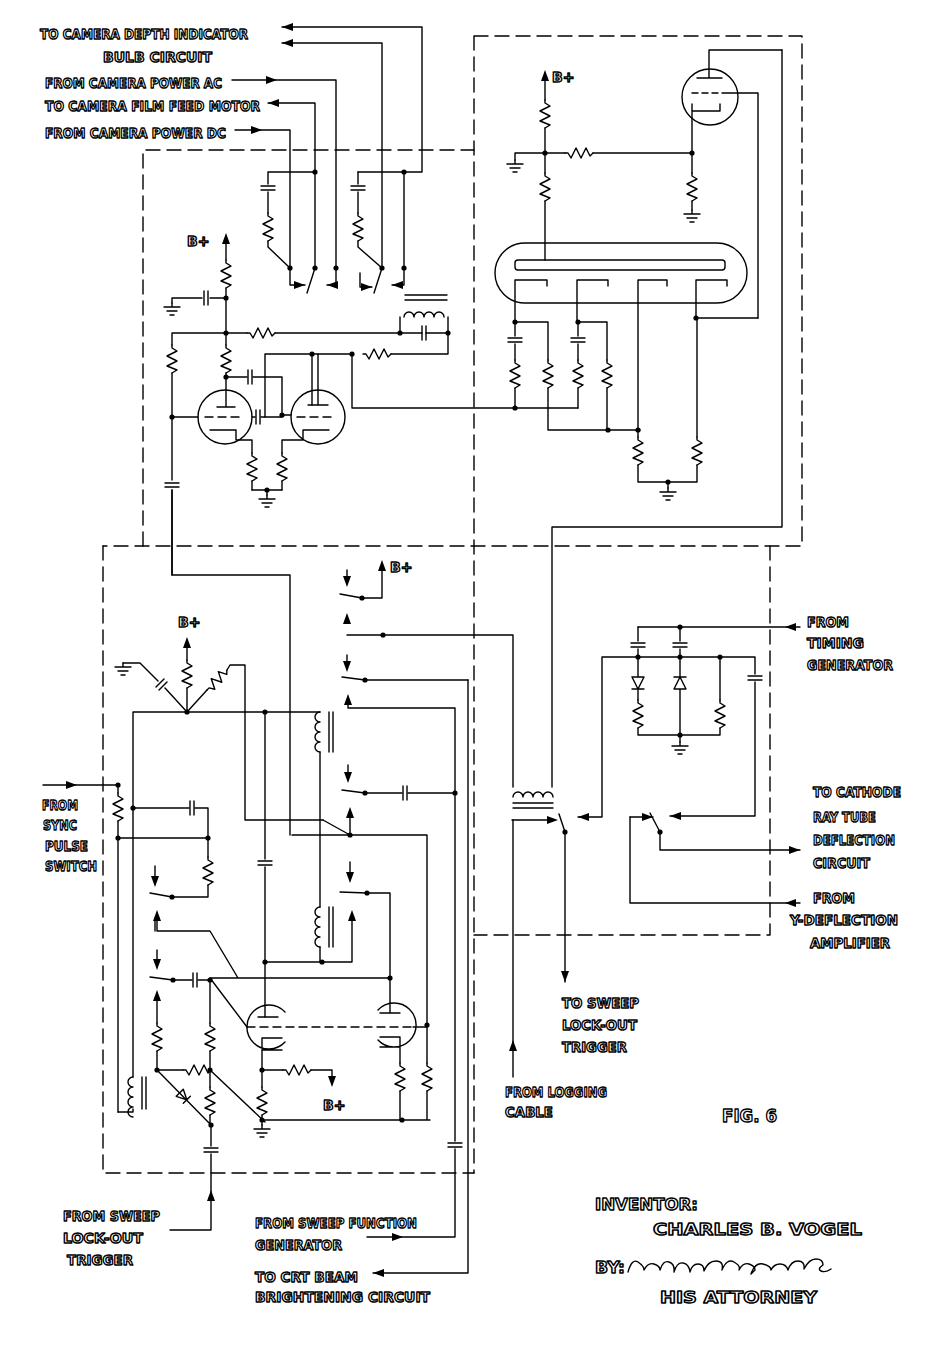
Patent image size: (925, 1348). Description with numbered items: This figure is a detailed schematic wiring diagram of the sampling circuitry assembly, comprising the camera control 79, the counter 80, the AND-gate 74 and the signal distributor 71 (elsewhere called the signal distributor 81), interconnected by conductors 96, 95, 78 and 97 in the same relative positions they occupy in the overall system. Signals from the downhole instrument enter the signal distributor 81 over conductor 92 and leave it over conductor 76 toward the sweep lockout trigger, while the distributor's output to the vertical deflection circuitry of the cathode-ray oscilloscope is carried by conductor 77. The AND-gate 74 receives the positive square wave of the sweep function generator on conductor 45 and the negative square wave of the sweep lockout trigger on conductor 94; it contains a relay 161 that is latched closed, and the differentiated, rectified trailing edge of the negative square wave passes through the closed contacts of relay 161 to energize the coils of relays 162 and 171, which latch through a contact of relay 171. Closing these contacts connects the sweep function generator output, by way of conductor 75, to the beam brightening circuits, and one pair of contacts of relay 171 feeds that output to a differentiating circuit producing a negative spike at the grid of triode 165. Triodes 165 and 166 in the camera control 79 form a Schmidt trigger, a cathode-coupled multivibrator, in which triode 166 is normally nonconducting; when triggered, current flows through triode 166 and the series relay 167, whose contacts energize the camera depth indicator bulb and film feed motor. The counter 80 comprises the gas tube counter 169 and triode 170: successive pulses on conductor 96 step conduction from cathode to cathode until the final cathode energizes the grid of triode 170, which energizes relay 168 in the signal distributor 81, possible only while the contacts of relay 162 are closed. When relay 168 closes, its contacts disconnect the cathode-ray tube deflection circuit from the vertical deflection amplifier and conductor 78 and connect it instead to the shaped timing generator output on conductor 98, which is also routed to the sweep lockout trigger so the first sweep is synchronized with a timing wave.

The conductor 45 is at (458, 1203).
The signal distributor 71 is at (47, 784).
The AND-gate 74 is at (110, 1162).
The CRT beam brightening output lead 75 is at (470, 1250).
The conductor 76 is at (568, 918).
The conductor 77 is at (748, 850).
The conductor 78 is at (748, 903).
The camera control 79 is at (140, 395).
The counter 80 is at (804, 456).
The signal distributor 81 is at (715, 938).
The conductor 92 is at (515, 903).
The conductor 94 is at (217, 1183).
The conductor 95 is at (253, 582).
The conductor 96 is at (436, 410).
The conductor 97 is at (555, 588).
The conductor 98 is at (730, 627).
The relay 161 is at (148, 958).
The relay 162 is at (342, 680).
The triode 165 is at (227, 453).
The triode 166 is at (333, 442).
The relay 167 is at (407, 286).
The relay 168 is at (593, 787).
The gas tube counter 169 is at (604, 243).
The triode 170 is at (685, 84).
The relay 171 is at (337, 890).